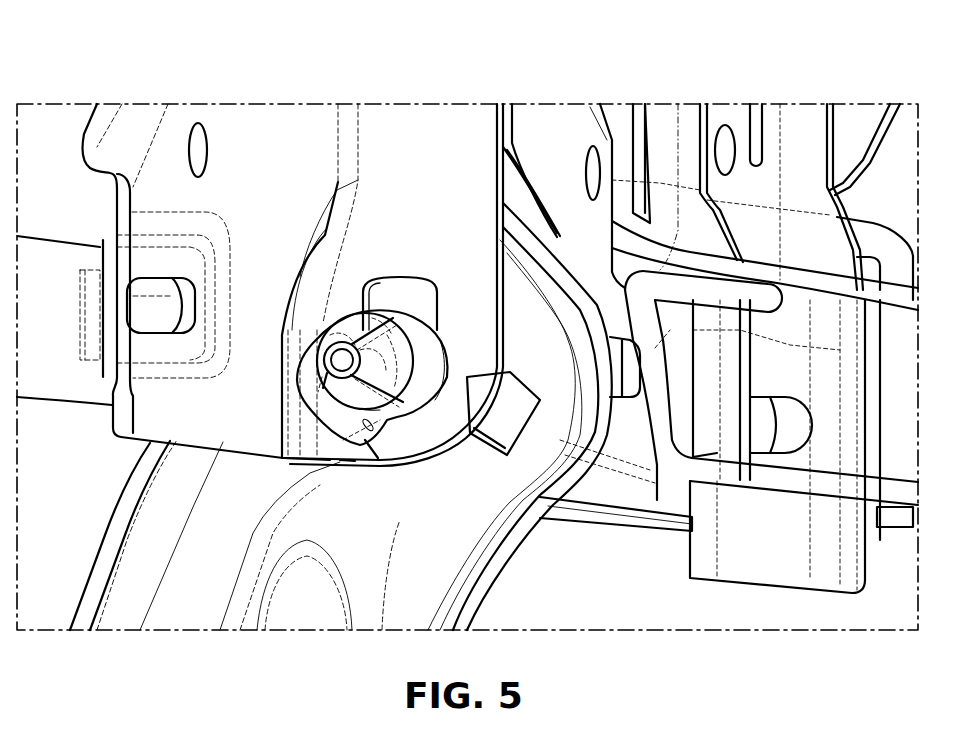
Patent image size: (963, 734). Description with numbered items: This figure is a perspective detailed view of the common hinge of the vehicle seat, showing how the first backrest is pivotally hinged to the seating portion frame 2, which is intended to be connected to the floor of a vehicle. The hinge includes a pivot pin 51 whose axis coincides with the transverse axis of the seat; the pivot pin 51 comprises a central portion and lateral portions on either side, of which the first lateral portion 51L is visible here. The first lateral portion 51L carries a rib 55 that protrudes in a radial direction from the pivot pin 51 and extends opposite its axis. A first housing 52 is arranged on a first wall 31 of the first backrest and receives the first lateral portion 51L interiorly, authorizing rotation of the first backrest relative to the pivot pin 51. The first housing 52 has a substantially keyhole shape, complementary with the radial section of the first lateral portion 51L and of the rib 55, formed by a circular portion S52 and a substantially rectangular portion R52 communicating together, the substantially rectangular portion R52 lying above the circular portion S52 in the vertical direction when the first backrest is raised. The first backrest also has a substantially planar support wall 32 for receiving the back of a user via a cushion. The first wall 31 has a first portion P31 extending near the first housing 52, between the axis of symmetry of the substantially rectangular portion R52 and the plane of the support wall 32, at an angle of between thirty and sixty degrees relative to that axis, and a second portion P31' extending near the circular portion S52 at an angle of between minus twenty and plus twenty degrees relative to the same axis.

The seating portion frame 2 is at (514, 540).
The first wall 31 is at (468, 128).
The support wall 32 is at (329, 93).
The pivot pin 51 is at (356, 290).
The first lateral portion 51L is at (416, 412).
The first housing 52 is at (450, 316).
The substantially rectangular portion R52 is at (429, 259).
The circular portion S52 is at (469, 360).
The rib 55 is at (378, 467).
The first portion P31 is at (266, 495).
The second portion P31' is at (327, 503).